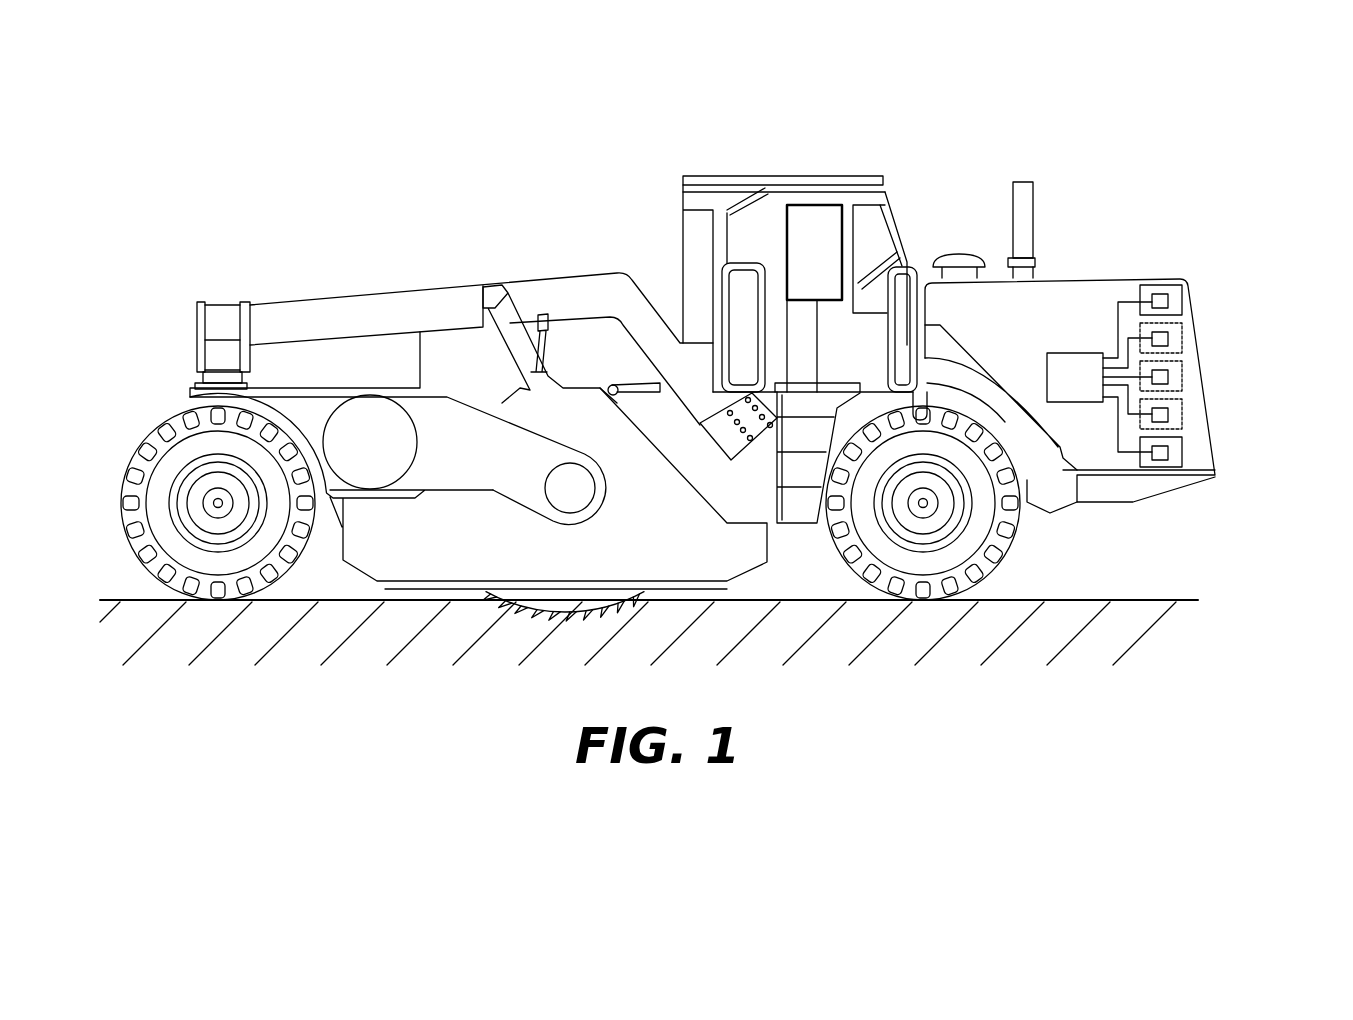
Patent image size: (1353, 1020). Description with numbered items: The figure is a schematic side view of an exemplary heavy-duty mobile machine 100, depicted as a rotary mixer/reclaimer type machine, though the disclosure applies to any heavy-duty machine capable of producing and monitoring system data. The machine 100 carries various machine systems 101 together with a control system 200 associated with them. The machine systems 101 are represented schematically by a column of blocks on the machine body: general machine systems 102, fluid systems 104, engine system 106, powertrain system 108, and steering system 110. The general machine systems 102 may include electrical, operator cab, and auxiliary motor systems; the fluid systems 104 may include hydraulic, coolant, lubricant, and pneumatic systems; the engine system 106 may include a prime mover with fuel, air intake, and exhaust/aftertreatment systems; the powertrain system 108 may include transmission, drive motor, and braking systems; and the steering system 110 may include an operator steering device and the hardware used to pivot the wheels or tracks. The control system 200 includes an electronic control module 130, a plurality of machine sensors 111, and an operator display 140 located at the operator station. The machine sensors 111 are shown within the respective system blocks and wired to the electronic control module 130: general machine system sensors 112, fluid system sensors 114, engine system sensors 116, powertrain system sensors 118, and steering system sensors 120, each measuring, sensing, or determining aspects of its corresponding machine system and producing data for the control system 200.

The machine 100 is at (313, 126).
The machine systems 101 is at (1155, 286).
The general machine systems 102 is at (1182, 288).
The fluid systems 104 is at (1182, 333).
The engine system 106 is at (1182, 368).
The powertrain system 108 is at (1182, 407).
The steering system 110 is at (1182, 448).
The machine sensors 111 is at (1102, 414).
The general machine system sensors 112 is at (1168, 302).
The fluid system sensors 114 is at (1168, 340).
The engine system sensors 116 is at (1168, 383).
The powertrain system sensors 118 is at (1168, 415).
The steering system sensors 120 is at (1168, 452).
The electronic control module 130 is at (1094, 390).
The operator display 140 is at (905, 256).
The control system 200 is at (1066, 314).